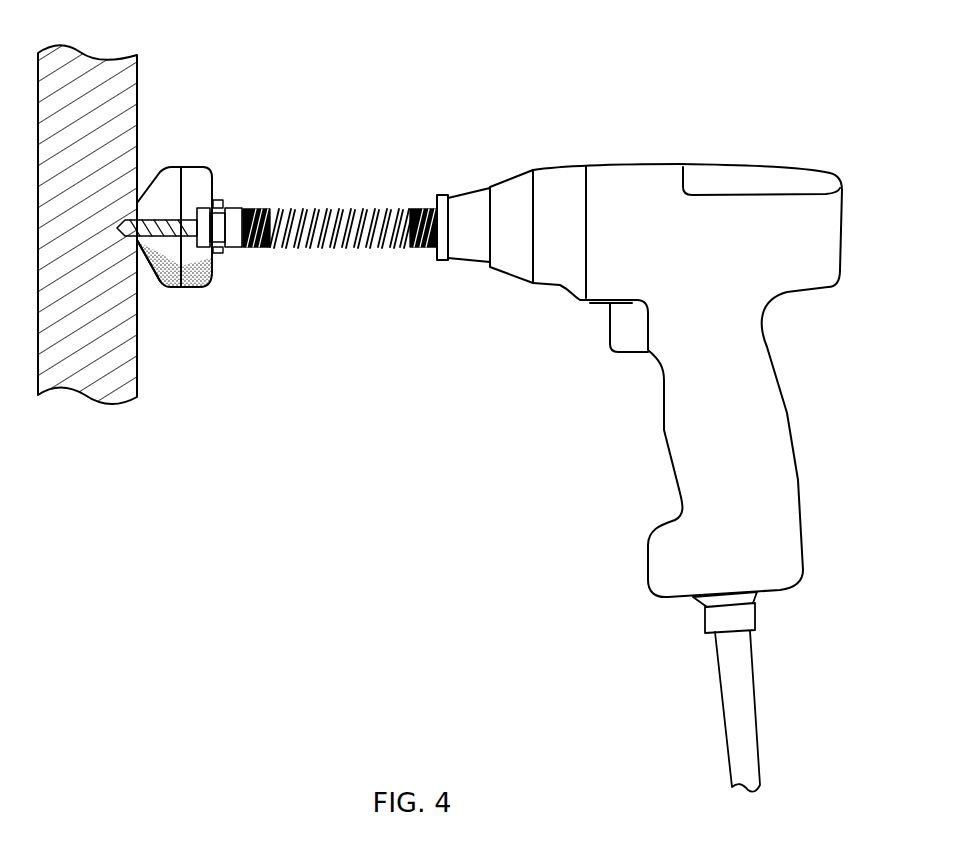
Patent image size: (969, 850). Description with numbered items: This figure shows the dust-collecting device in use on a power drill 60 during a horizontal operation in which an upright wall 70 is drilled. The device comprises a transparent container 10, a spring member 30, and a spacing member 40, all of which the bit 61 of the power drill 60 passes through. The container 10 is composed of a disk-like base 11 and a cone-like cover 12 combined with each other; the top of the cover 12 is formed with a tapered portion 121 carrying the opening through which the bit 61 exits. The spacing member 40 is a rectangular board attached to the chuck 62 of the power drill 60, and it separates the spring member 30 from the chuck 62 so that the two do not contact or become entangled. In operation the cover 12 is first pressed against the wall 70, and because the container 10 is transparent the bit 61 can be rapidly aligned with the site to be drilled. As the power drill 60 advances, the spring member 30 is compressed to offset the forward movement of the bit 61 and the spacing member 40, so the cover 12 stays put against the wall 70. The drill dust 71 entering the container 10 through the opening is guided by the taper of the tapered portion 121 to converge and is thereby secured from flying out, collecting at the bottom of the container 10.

The container 10 is at (222, 118).
The base 11 is at (204, 175).
The cover 12 is at (165, 178).
The tapered portion 121 is at (150, 263).
The spring member 30 is at (330, 208).
The spacing member 40 is at (440, 262).
The power drill 60 is at (733, 96).
The bit 61 is at (377, 208).
The chuck 62 is at (470, 203).
The wall 70 is at (123, 73).
The drill dust 71 is at (197, 292).